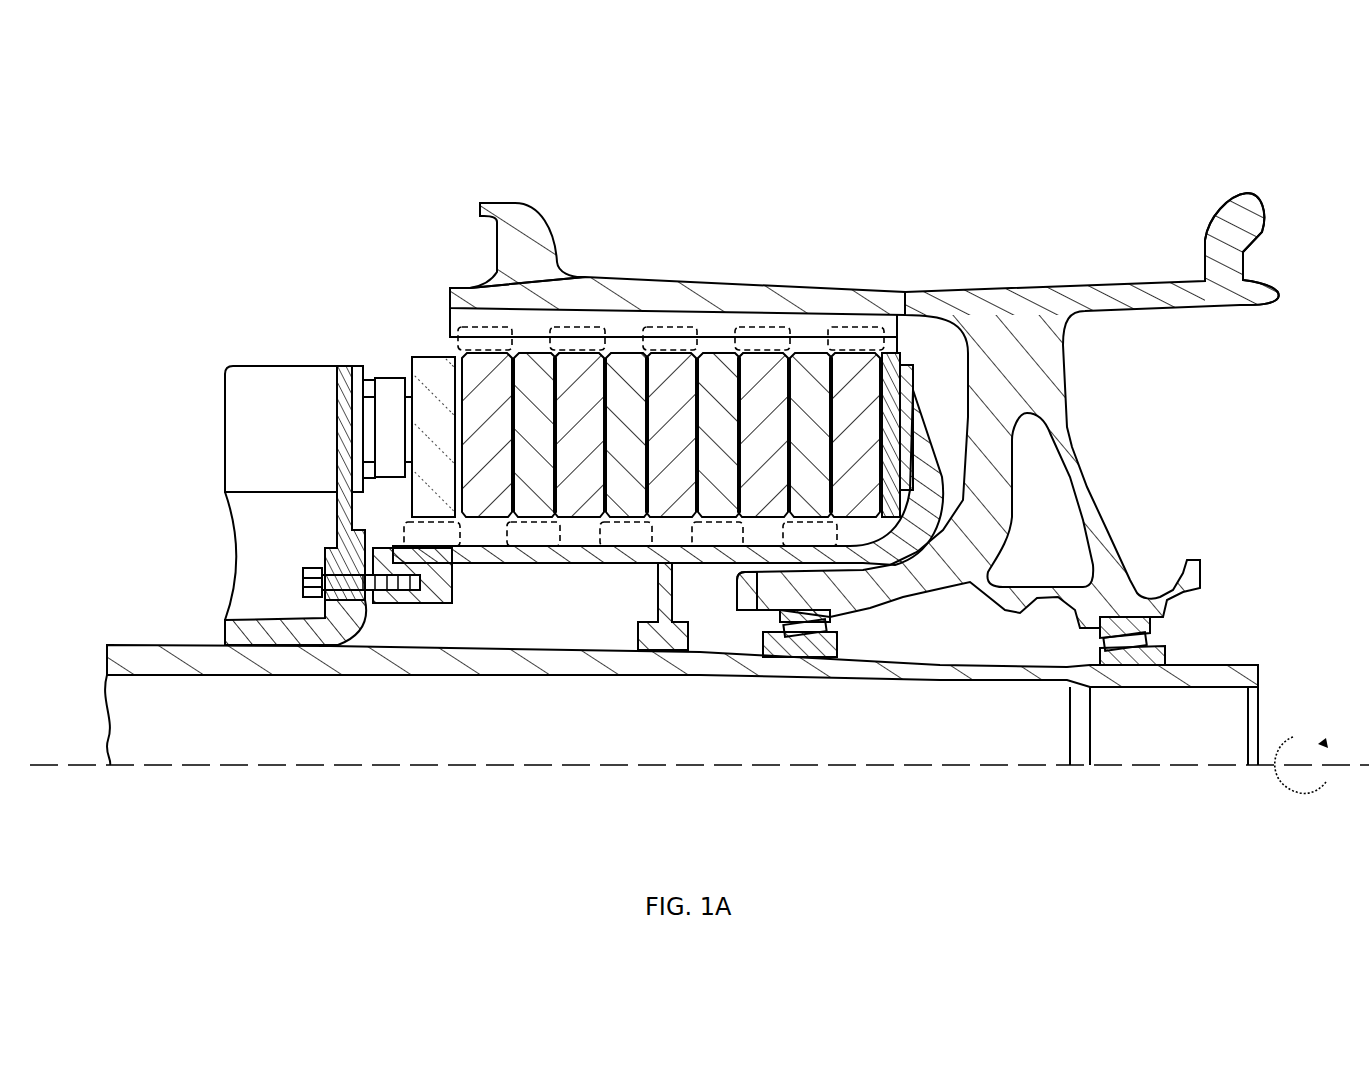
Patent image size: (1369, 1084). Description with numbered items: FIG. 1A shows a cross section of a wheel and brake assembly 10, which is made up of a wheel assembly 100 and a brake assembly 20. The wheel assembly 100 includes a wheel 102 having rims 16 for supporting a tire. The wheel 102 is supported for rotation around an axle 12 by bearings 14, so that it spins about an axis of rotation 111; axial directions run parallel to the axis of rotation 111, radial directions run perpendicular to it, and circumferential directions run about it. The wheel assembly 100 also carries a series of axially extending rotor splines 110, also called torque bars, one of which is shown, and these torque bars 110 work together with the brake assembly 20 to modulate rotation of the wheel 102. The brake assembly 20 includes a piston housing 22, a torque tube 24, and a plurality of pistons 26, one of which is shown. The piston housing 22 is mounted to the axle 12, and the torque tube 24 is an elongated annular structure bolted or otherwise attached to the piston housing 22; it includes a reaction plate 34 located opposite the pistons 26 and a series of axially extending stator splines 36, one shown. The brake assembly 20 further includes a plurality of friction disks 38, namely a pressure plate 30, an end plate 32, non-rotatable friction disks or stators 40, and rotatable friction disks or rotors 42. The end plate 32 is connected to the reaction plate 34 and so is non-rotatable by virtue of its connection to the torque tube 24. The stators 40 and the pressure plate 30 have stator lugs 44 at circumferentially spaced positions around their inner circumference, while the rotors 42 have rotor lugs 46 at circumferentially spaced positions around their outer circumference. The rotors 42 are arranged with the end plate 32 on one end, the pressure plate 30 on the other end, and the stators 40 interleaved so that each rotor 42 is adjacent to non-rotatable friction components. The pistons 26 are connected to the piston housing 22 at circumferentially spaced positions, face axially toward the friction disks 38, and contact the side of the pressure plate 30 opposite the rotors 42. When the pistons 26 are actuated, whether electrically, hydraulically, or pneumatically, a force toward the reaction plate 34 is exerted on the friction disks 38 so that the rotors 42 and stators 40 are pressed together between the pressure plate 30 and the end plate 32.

The wheel and brake assembly 10 is at (298, 165).
The axle 12 is at (500, 660).
The bearings 14 is at (805, 635).
The rims 16 is at (520, 215).
The brake assembly 20 is at (325, 290).
The piston housing 22 is at (335, 538).
The torque tube 24 is at (757, 574).
The pistons 26 is at (392, 390).
The pressure plate 30 is at (437, 370).
The end plate 32 is at (893, 360).
The reaction plate 34 is at (908, 412).
The stator splines 36 is at (568, 540).
The friction disks 38 is at (405, 338).
The stators 40 is at (545, 432).
The rotors 42 is at (497, 456).
The stator lugs 44 is at (445, 535).
The rotor lugs 46 is at (475, 340).
The wheel assembly 100 is at (925, 198).
The wheel 102 is at (950, 300).
The rotor splines 110 is at (712, 330).
The axis of rotation 111 is at (968, 768).